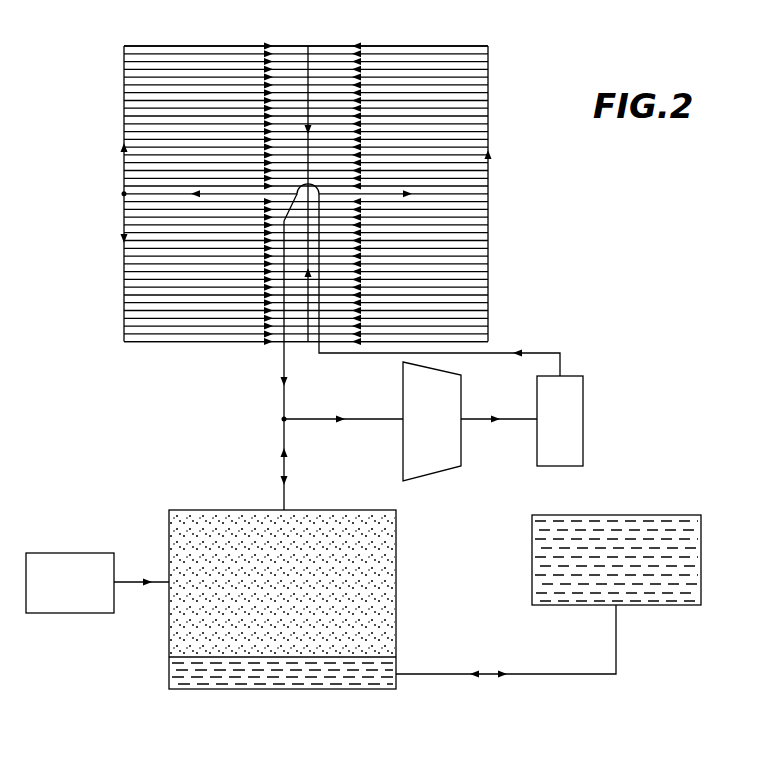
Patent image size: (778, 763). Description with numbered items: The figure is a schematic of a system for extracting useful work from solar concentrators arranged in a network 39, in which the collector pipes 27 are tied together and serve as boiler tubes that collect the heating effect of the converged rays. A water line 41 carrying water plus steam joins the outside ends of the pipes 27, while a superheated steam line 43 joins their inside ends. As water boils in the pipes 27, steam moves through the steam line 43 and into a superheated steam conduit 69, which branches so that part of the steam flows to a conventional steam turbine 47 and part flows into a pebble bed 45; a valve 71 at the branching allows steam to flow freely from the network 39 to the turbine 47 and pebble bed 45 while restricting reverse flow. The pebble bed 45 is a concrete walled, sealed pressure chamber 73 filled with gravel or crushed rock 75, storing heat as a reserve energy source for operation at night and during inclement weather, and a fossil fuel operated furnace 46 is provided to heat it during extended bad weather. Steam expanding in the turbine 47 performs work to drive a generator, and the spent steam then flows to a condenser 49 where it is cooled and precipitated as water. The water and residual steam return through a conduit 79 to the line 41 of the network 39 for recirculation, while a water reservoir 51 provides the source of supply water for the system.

The collector pipe 27 is at (486, 80).
The network 39 is at (104, 173).
The water line 41 is at (488, 194).
The superheated steam line 43 is at (306, 50).
The pebble bed 45 is at (242, 498).
The fossil fuel operated furnace 46 is at (71, 607).
The steam turbine 47 is at (450, 453).
The condenser 49 is at (577, 452).
The water reservoir 51 is at (702, 551).
The superheated steam conduit 69 is at (283, 370).
The valve 71 is at (283, 419).
The pressure chamber 73 is at (396, 584).
The crushed rock 75 is at (190, 540).
The conduit 79 is at (536, 354).